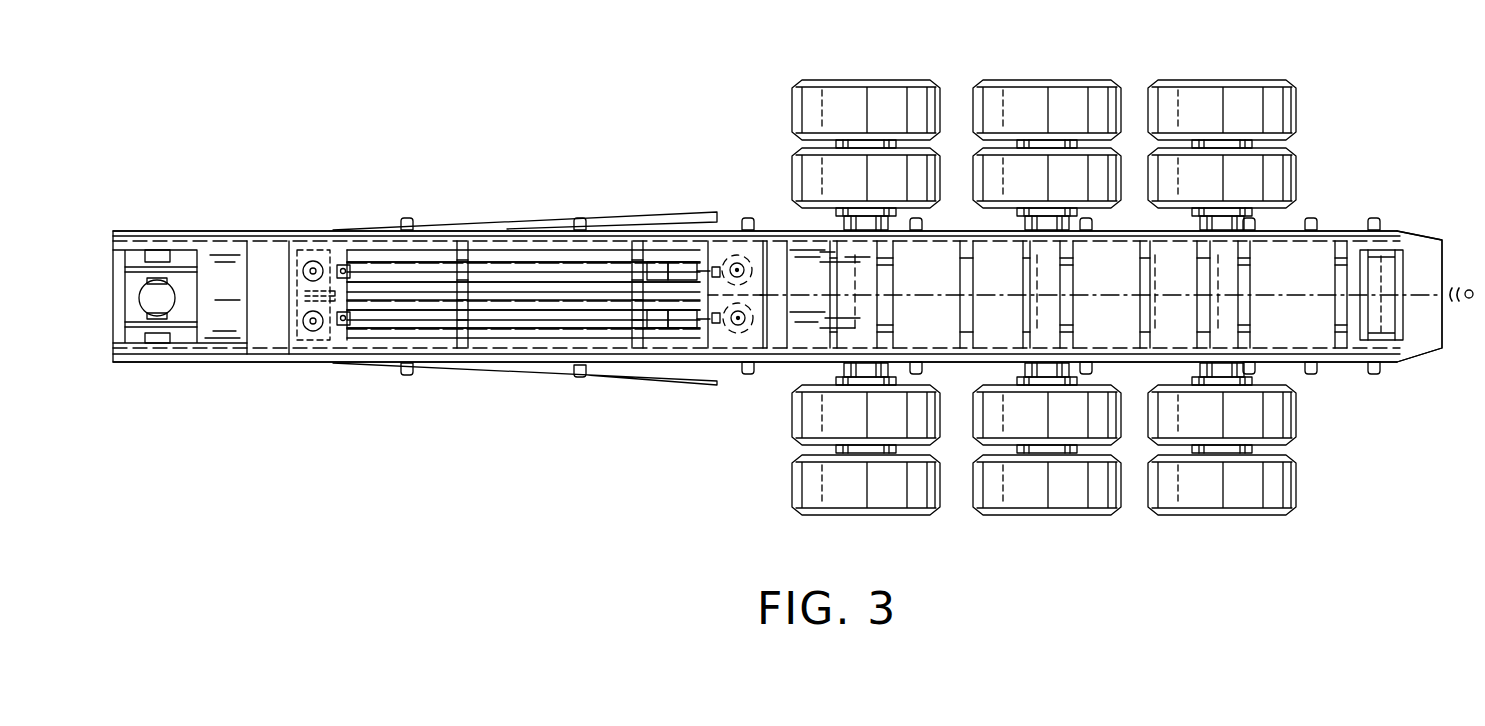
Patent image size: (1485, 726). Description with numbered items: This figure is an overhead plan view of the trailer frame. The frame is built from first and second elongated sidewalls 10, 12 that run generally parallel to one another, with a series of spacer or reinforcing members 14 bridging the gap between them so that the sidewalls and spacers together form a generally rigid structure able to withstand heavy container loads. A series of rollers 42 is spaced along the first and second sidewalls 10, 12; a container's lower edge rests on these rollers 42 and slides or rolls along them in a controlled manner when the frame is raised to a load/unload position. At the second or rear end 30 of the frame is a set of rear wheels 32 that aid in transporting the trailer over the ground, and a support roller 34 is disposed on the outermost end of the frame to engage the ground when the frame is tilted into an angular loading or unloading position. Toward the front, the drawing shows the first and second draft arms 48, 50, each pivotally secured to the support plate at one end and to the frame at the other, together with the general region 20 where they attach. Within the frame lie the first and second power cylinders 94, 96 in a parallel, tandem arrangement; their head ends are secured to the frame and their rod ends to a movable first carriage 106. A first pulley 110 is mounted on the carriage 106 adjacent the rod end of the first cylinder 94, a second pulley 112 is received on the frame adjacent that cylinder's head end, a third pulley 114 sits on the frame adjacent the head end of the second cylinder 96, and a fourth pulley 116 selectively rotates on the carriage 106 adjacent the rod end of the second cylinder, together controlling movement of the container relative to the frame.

The first elongated sidewall 10 is at (935, 346).
The second elongated sidewall 12 is at (923, 238).
The spacer or reinforcing members 14 is at (1068, 297).
The gooseneck beam assembly 20 is at (322, 228).
The rear end 30 is at (1338, 226).
The rear wheels 32 is at (1043, 92).
The support roller 34 is at (1390, 284).
The rollers 42 is at (412, 373).
The first draft arm 48 is at (654, 372).
The second draft arm 50 is at (648, 214).
The first power cylinder 94 is at (512, 268).
The second power cylinder 96 is at (520, 315).
The first carriage 106 is at (755, 250).
The first pulley 110 is at (734, 262).
The second pulley 112 is at (305, 262).
The third pulley 114 is at (313, 331).
The fourth pulley 116 is at (738, 328).